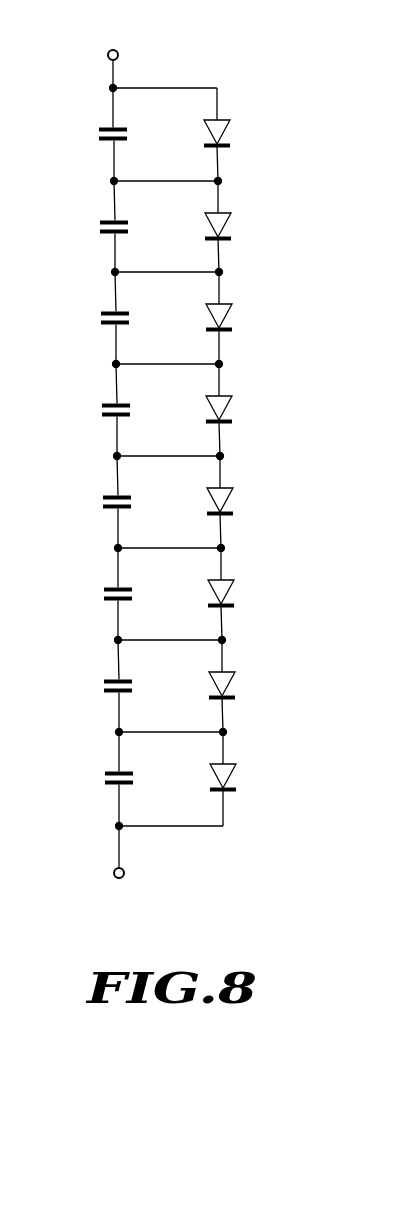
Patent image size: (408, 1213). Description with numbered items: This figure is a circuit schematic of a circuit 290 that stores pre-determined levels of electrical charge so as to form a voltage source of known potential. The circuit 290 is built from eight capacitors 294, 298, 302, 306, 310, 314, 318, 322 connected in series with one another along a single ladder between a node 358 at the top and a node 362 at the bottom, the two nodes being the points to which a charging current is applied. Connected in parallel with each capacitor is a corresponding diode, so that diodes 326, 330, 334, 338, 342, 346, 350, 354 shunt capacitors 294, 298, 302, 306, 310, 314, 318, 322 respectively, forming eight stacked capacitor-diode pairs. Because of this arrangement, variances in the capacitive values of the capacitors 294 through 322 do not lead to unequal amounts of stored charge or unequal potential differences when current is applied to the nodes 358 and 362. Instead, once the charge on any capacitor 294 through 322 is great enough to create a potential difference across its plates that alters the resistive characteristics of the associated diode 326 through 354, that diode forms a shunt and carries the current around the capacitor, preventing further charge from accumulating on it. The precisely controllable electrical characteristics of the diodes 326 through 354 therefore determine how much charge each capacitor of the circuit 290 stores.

The circuit 290 is at (67, 75).
The capacitor 294 is at (100, 128).
The capacitor 298 is at (101, 221).
The capacitor 302 is at (102, 312).
The capacitor 306 is at (103, 404).
The capacitor 310 is at (104, 496).
The capacitor 314 is at (105, 588).
The capacitor 318 is at (105, 680).
The capacitor 322 is at (106, 772).
The diode 326 is at (228, 127).
The diode 330 is at (229, 220).
The diode 334 is at (230, 311).
The diode 338 is at (230, 403).
The diode 342 is at (231, 495).
The diode 346 is at (232, 587).
The diode 350 is at (233, 679).
The diode 354 is at (234, 771).
The node 358 is at (117, 50).
The node 362 is at (122, 879).